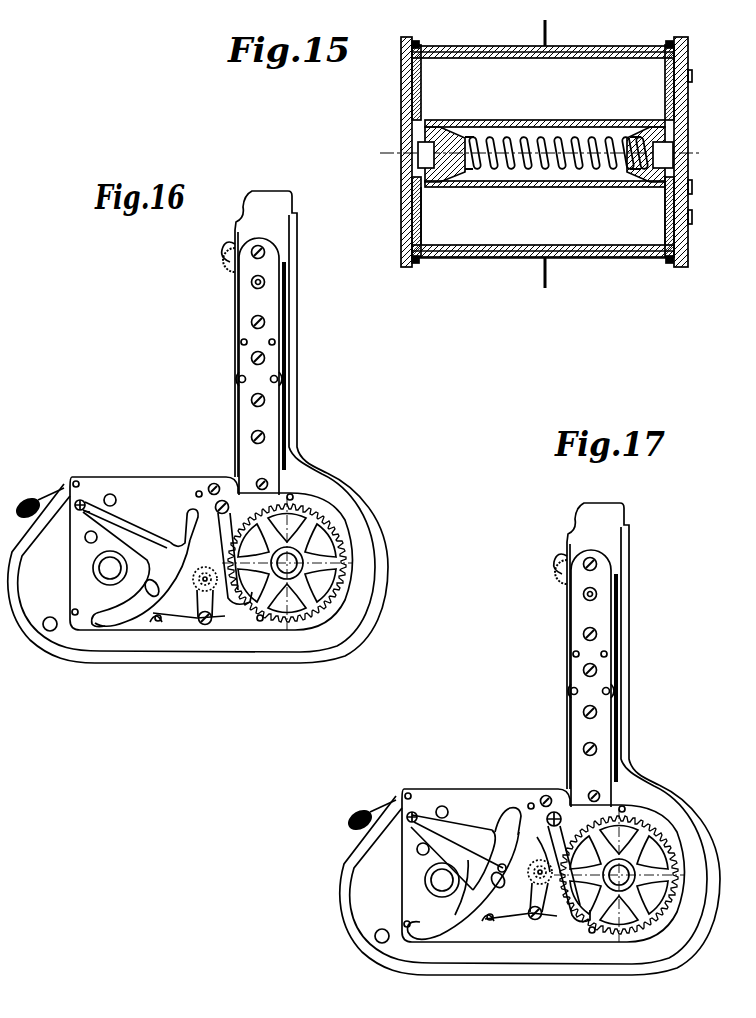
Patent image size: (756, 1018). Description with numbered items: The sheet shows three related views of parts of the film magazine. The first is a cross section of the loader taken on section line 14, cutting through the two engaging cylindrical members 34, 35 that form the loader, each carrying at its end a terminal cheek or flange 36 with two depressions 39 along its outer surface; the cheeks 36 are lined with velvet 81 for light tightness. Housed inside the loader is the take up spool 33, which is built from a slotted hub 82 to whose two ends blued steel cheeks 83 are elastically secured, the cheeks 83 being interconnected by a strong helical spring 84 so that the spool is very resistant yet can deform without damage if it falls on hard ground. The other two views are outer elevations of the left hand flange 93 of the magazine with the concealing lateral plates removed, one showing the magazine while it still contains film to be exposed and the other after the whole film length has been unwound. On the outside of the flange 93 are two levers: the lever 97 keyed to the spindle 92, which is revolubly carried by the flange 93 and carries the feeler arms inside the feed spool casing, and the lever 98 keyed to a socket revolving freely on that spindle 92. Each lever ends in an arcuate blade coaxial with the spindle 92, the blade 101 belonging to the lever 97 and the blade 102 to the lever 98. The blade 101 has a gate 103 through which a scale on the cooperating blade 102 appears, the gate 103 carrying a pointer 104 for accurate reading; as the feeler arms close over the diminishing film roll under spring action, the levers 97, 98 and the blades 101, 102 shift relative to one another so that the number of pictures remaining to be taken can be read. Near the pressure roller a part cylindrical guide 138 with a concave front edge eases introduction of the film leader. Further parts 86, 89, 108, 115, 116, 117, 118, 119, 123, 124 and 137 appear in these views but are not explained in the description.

In FIG. 15, the section line 14 is at (559, 155).
In FIG. 15, the take up spool 33 is at (518, 228).
In FIG. 15, the cylindrical member 34 is at (525, 258).
In FIG. 15, the cylindrical member 35 is at (604, 258).
In FIG. 15, the cheek 36 is at (401, 210).
In FIG. 15, the depressions 39 is at (690, 80).
In FIG. 15, the velvet lining 81 is at (674, 178).
In FIG. 15, the hub 82 is at (572, 120).
In FIG. 15, the cheeks 83 is at (668, 90).
In FIG. 15, the helical spring 84 is at (584, 182).
In FIG. 15, the top casing wall 86 is at (462, 46).
In FIG. 16, the roller pivot 89 is at (215, 593).
In FIG. 17, the roller pivot 89 is at (567, 939).
In FIG. 16, the spindle 92 is at (82, 500).
In FIG. 17, the spindle 92 is at (421, 789).
In FIG. 16, the flange 93 is at (135, 467).
In FIG. 17, the flange 93 is at (543, 897).
In FIG. 16, the lever 97 is at (95, 521).
In FIG. 17, the lever 97 is at (452, 794).
In FIG. 16, the lever 98 is at (140, 530).
In FIG. 17, the lever 98 is at (427, 867).
In FIG. 16, the arcuate blade 101 is at (108, 611).
In FIG. 17, the arcuate blade 101 is at (517, 794).
In FIG. 16, the arcuate blade 102 is at (190, 509).
In FIG. 17, the arcuate blade 102 is at (461, 885).
In FIG. 17, the gate 103 is at (466, 830).
In FIG. 17, the pointer 104 is at (482, 846).
In FIG. 16, the arm 108 is at (213, 540).
In FIG. 17, the arm 108 is at (543, 853).
In FIG. 16, the pawl lever 115 is at (248, 602).
In FIG. 17, the pawl lever 115 is at (590, 914).
In FIG. 16, the roller 116 is at (197, 587).
In FIG. 16, the pivot screw 117 is at (206, 625).
In FIG. 17, the pivot screw 117 is at (535, 958).
In FIG. 16, the link bar 118 is at (200, 624).
In FIG. 17, the link bar 118 is at (521, 960).
In FIG. 16, the spring 119 is at (177, 638).
In FIG. 17, the spring 119 is at (478, 961).
In FIG. 16, the gear wheel 123 is at (322, 594).
In FIG. 17, the gear wheel 123 is at (640, 892).
In FIG. 17, the pin 124 is at (524, 906).
In FIG. 16, the ratchet wheel 137 is at (225, 276).
In FIG. 17, the ratchet wheel 137 is at (546, 588).
In FIG. 16, the part cylindrical guide 138 is at (230, 248).
In FIG. 17, the part cylindrical guide 138 is at (550, 549).